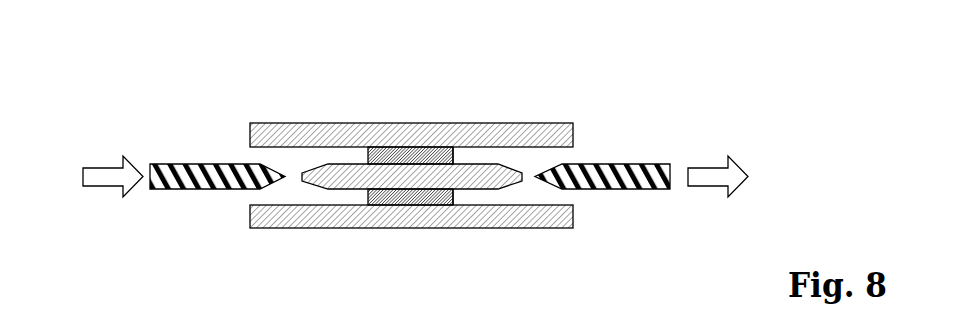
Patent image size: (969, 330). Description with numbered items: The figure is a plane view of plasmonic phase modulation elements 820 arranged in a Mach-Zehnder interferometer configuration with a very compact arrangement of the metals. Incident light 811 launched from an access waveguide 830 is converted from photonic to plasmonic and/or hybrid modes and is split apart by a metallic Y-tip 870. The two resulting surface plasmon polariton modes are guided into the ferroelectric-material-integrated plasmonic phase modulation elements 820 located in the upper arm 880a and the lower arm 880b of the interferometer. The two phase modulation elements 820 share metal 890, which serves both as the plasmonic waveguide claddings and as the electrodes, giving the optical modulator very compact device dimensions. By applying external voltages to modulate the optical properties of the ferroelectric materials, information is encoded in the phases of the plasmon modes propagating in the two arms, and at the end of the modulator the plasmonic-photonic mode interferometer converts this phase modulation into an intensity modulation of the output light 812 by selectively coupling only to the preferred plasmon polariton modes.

The incident light 811 is at (112, 175).
The output light 812 is at (712, 177).
The plasmonic phase modulation elements 820 is at (392, 193).
The access waveguide 830 is at (197, 167).
The metallic Y-tip 870 is at (495, 173).
The upper arm 880a is at (337, 145).
The lower arm 880b is at (466, 182).
The metal 890 is at (470, 178).